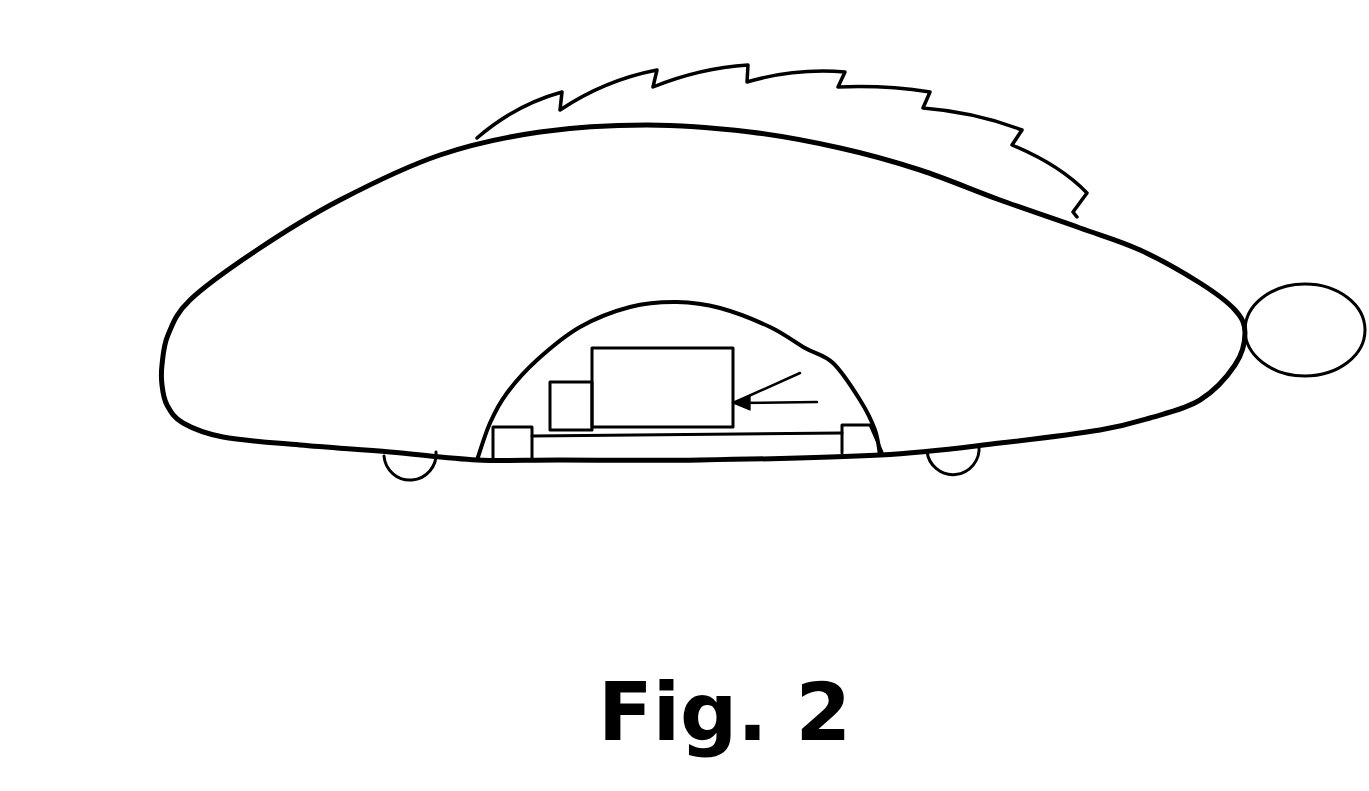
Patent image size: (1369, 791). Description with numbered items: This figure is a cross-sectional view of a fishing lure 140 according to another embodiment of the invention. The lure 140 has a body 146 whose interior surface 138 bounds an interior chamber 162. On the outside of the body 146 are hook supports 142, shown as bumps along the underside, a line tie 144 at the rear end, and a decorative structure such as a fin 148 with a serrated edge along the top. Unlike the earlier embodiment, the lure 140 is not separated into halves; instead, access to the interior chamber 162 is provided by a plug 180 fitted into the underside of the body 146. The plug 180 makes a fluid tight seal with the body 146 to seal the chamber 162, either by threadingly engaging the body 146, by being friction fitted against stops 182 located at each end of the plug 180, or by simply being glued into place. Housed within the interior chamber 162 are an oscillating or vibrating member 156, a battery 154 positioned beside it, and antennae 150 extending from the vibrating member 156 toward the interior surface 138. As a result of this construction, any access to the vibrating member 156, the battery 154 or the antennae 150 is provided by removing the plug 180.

The lure 140 is at (186, 224).
The body 146 is at (413, 163).
The fin 148 is at (913, 88).
The interior surface 138 is at (775, 328).
The interior chamber 162 is at (688, 322).
The oscillating or vibrating member 156 is at (607, 360).
The battery 154 is at (562, 396).
The antennae 150 is at (800, 402).
The plug 180 is at (668, 460).
The stops 182 is at (513, 452).
The hook supports 142 is at (390, 470).
The line tie 144 is at (1297, 377).